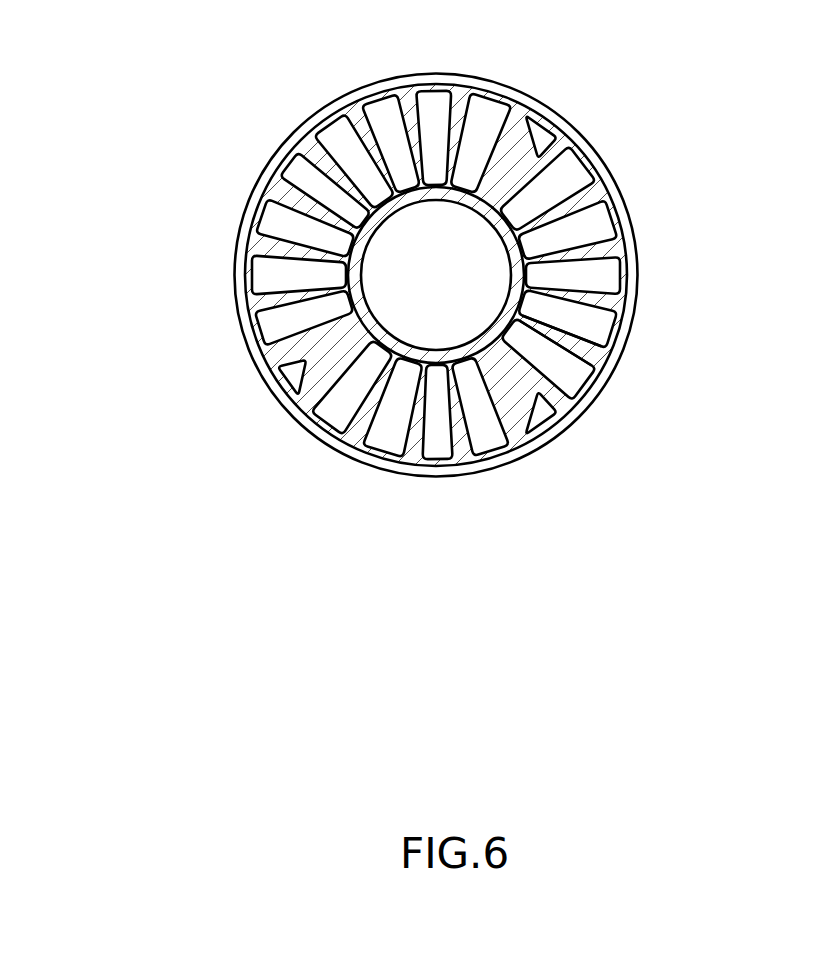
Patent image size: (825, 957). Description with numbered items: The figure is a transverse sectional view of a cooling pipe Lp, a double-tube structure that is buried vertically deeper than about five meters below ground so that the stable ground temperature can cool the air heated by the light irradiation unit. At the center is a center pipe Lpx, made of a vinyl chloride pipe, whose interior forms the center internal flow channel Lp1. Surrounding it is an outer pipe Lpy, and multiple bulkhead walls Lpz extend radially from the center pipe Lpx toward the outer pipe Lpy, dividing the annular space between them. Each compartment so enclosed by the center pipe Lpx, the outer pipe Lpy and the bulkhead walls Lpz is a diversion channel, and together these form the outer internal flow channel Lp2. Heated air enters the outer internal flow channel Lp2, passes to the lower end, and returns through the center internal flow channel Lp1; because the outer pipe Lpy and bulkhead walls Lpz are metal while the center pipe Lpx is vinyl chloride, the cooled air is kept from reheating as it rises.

The cooling pipe Lp is at (177, 399).
The center internal flow channel Lp1 is at (446, 316).
The outer internal flow channel Lp2 is at (297, 178).
The bulkhead walls Lpz is at (540, 148).
The outer pipe Lpy is at (636, 325).
The center pipe Lpx is at (596, 364).